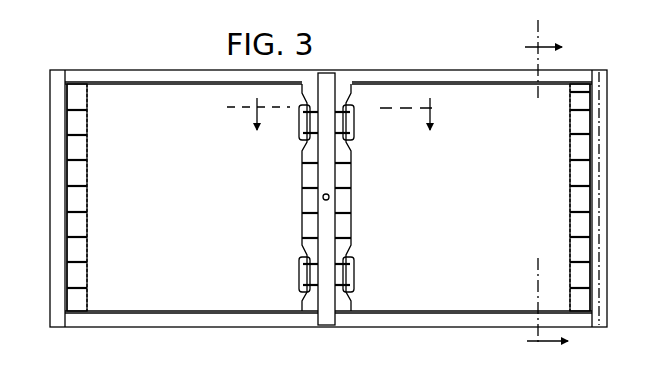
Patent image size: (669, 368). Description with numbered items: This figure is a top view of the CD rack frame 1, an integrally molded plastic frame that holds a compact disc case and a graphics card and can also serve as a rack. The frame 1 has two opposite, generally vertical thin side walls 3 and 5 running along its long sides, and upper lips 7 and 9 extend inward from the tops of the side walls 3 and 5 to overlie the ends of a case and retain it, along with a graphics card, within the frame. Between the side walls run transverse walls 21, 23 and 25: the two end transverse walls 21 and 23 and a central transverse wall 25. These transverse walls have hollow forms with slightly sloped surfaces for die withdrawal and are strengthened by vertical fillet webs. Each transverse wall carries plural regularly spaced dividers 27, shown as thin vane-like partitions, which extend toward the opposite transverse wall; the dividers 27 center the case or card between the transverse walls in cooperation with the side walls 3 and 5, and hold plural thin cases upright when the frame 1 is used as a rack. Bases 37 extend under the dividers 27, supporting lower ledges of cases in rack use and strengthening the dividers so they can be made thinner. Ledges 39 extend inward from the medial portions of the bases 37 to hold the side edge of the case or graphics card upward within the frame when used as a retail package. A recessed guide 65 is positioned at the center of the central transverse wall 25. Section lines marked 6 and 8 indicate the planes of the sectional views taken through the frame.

The CD rack frame 1 is at (472, 58).
The side wall 3 is at (518, 325).
The side wall 5 is at (418, 70).
The section line 6- 6 is at (546, 192).
The upper lip 7 is at (512, 322).
The section line 8- 8 is at (339, 116).
The upper lip 9 is at (505, 83).
The transverse wall 21 is at (84, 152).
The transverse wall 23 is at (607, 145).
The central transverse wall 25 is at (338, 152).
The dividers 27 is at (317, 209).
The bases 37 is at (80, 202).
The ledges 39 is at (88, 226).
The recessed guide 65 is at (330, 194).